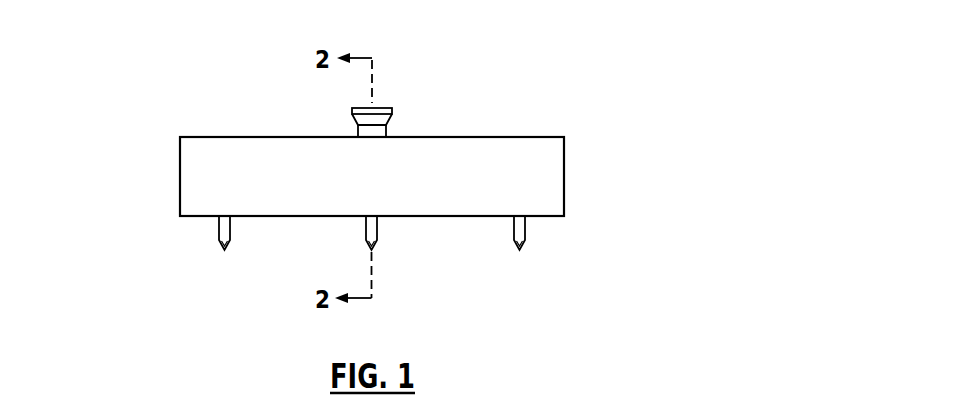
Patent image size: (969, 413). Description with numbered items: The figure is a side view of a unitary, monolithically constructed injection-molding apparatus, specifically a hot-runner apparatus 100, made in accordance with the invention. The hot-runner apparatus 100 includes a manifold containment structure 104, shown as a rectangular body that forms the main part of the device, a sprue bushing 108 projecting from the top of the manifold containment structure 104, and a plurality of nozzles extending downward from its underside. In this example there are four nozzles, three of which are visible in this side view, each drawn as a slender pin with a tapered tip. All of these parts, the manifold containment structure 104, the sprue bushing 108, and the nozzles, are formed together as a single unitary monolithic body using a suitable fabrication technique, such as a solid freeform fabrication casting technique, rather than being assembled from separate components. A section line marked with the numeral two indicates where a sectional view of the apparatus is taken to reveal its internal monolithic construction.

The hot-runner apparatus 100 is at (556, 91).
The manifold containment structure 104 is at (180, 175).
The sprue bushing 108 is at (384, 108).